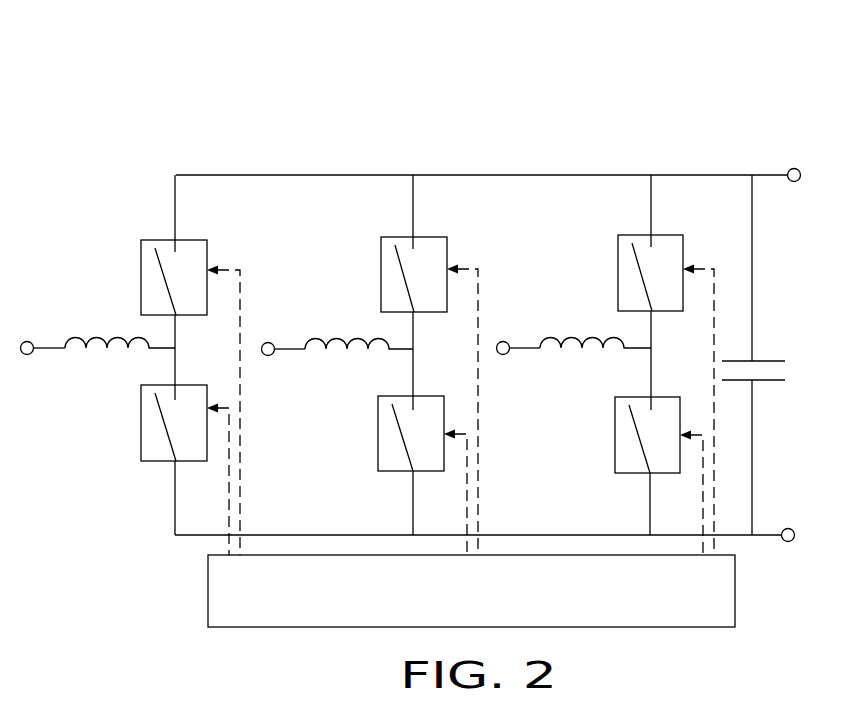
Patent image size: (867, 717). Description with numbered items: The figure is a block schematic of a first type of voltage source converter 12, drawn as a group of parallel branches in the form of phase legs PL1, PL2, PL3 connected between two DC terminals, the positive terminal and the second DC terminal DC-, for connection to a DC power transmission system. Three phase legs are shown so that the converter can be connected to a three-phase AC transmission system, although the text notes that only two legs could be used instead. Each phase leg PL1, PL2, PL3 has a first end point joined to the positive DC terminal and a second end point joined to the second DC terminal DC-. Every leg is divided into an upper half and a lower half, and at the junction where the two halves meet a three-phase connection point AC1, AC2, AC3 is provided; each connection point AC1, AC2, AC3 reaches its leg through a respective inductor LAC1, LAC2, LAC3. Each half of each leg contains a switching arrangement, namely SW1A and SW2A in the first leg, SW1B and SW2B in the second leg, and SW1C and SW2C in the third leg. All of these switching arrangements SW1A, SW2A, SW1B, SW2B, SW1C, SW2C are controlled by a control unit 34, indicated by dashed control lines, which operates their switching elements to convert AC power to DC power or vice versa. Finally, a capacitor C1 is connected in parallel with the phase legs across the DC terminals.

The voltage source converter 12 is at (348, 112).
The control unit 34 is at (471, 591).
The phase leg PL1 is at (467, 189).
The phase leg PL2 is at (414, 190).
The phase leg PL3 is at (651, 188).
The switching arrangement SW1A is at (148, 397).
The switching arrangement SW2A is at (146, 435).
The switching arrangement SW1B is at (387, 396).
The switching arrangement SW2B is at (378, 433).
The switching arrangement SW1C is at (618, 395).
The switching arrangement SW2C is at (613, 433).
The three-phase connection point AC1 is at (41, 328).
The three-phase connection point AC2 is at (276, 333).
The three-phase connection point AC3 is at (513, 330).
The inductor LAC1 is at (116, 360).
The inductor LAC2 is at (359, 361).
The inductor LAC3 is at (595, 358).
The capacitor C1 is at (777, 355).
The second DC terminal DC- is at (792, 514).